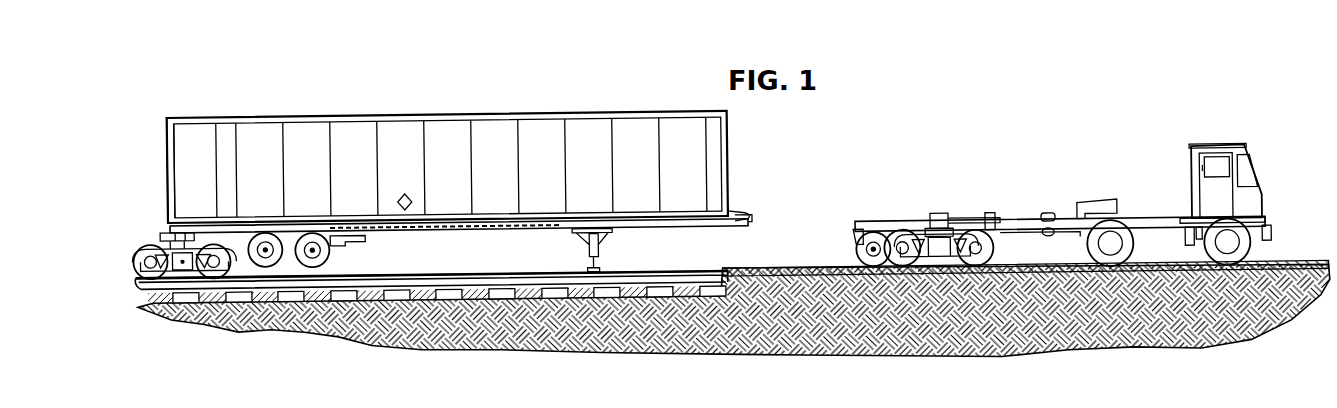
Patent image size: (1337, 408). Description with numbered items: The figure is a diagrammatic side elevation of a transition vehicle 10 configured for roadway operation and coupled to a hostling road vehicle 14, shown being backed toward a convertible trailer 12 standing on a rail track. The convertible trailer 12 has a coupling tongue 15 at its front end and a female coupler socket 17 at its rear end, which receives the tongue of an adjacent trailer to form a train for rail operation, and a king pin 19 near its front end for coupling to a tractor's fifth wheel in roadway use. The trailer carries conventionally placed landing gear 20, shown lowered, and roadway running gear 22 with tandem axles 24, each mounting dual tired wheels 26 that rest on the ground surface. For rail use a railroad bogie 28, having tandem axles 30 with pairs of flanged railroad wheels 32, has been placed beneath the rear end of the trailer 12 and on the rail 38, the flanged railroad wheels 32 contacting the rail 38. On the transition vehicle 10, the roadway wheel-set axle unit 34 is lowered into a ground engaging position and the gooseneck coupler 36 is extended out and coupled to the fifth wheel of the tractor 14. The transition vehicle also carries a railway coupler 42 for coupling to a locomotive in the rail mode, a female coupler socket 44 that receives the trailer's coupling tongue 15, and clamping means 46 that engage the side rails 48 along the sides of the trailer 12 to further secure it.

The transition vehicle 10 is at (899, 208).
The convertible trailer 12 is at (398, 112).
The road vehicle 14 is at (1266, 184).
The coupling tongue 15 is at (746, 222).
The female coupler socket 17 is at (170, 226).
The king pin 19 is at (678, 229).
The trailer landing gear 20 is at (587, 255).
The roadway running gear 22 is at (337, 255).
The tandem axles 24 is at (312, 253).
The dual tired wheels 26 is at (265, 252).
The railroad bogie 28 is at (152, 231).
The tandem axles 30 is at (150, 263).
The flanged railroad wheels 32 is at (142, 247).
The roadway wheel-set axle unit 34 is at (860, 245).
The gooseneck coupler 36 is at (1068, 247).
The rail 38 is at (393, 276).
The railway coupler 42 is at (1048, 226).
The female coupler socket 44 is at (991, 224).
The clamping means 46 is at (938, 224).
The side rails 48 is at (470, 234).